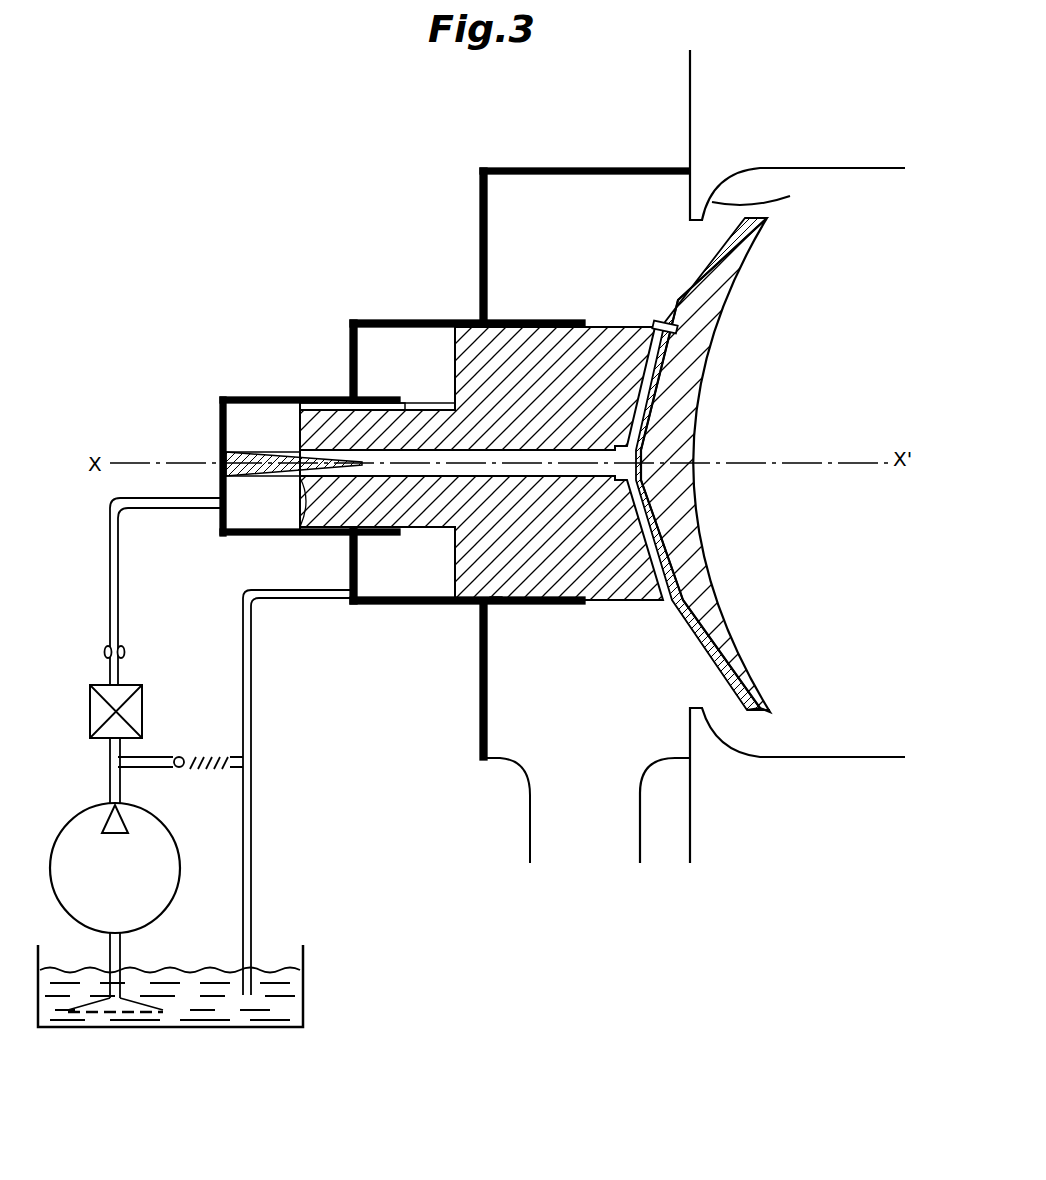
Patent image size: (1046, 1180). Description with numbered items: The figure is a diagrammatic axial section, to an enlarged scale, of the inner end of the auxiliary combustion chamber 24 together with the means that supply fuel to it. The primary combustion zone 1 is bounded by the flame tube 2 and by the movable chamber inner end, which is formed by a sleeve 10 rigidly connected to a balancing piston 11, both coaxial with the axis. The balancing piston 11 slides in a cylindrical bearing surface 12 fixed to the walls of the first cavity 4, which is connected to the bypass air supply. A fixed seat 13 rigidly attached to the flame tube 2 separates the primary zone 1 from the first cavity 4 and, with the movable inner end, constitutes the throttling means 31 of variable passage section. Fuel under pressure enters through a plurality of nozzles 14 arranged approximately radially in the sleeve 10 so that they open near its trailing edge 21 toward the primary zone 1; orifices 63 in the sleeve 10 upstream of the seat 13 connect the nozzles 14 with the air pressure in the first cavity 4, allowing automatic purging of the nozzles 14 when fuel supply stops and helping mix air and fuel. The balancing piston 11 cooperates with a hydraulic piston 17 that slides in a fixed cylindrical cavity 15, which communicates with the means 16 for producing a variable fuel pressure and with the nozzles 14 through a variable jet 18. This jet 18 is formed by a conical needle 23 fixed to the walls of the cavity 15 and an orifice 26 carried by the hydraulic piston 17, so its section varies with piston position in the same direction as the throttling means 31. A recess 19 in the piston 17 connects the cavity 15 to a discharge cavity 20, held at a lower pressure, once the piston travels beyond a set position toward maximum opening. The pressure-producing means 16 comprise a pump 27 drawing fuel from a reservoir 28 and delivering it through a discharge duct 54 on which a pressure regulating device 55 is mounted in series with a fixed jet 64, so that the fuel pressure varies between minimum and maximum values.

The primary combustion zone 1 is at (882, 733).
The flame tube 2 is at (828, 760).
The first cavity 4 is at (517, 730).
The sleeve 10 is at (722, 622).
The balancing piston 11 is at (628, 573).
The cylindrical bearing surface 12 is at (542, 604).
The fixed seat 13 is at (790, 196).
The nozzles 14 is at (743, 668).
The fixed cylindrical cavity 15 is at (267, 414).
The means for producing variable fuel pressure 16 is at (116, 701).
The hydraulic piston 17 is at (425, 512).
The variable jet 18 is at (317, 447).
The recess 19 is at (336, 400).
The discharge cavity 20 is at (387, 582).
The trailing edge 21 is at (767, 220).
The needle 23 is at (263, 452).
The auxiliary combustion chamber 24 is at (771, 785).
The orifice 26 is at (303, 535).
The pump 27 is at (178, 848).
The reservoir 28 is at (304, 982).
The throttling means 31 is at (728, 712).
The discharge duct 54 is at (119, 602).
The pressure regulating device 55 is at (143, 712).
The orifices 63 is at (657, 322).
The fixed jet 64 is at (126, 652).